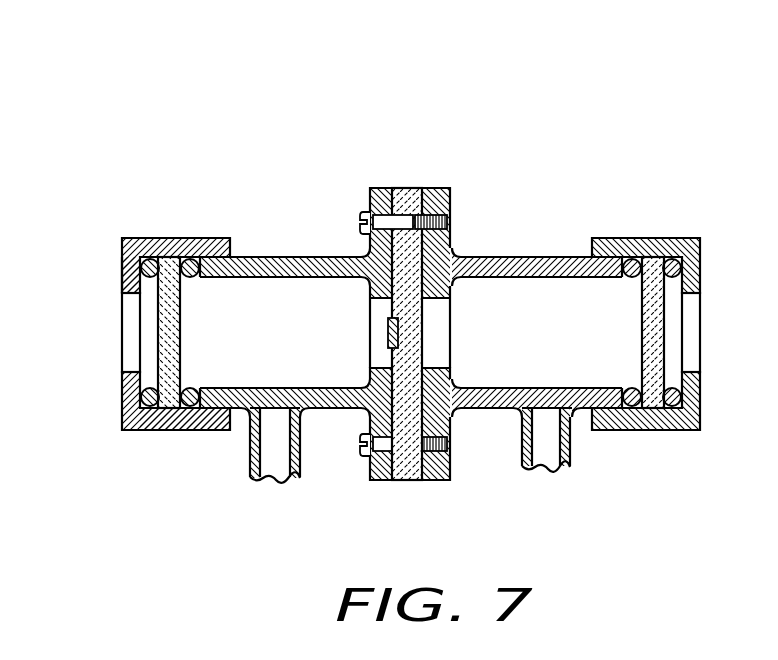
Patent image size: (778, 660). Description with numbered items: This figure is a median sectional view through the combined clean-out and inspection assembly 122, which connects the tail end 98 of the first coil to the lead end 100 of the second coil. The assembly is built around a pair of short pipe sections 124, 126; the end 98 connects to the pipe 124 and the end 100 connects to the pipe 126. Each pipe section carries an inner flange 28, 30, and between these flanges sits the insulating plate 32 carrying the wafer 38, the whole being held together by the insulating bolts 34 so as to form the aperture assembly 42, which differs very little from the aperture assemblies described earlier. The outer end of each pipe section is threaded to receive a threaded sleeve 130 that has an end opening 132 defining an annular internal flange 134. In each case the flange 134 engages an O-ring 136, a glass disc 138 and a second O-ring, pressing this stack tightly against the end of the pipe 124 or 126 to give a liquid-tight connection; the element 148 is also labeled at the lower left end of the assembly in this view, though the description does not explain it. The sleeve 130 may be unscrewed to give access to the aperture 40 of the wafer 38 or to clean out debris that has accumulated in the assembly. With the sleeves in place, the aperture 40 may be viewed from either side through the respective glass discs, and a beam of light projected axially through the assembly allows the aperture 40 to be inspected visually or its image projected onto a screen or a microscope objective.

The aperture assembly 42 is at (411, 215).
The inner flange 28 is at (373, 198).
The inner flange 30 is at (452, 201).
The insulating plate 32 is at (410, 481).
The insulating bolts 34 is at (362, 219).
The wafer 38 is at (395, 322).
The aperture 40 is at (388, 333).
The tail end 98 is at (250, 463).
The lead end 100 is at (572, 450).
The combined clean-out and inspection assembly 122 is at (201, 454).
The short pipe section 124 is at (253, 257).
The short pipe section 126 is at (518, 257).
The threaded sleeve 130 is at (183, 200).
The end opening 132 is at (122, 341).
The annular internal flange 134 is at (122, 262).
The O-ring 136 is at (122, 421).
The glass disc 138 is at (153, 430).
The O-ring seals 148 is at (175, 431).